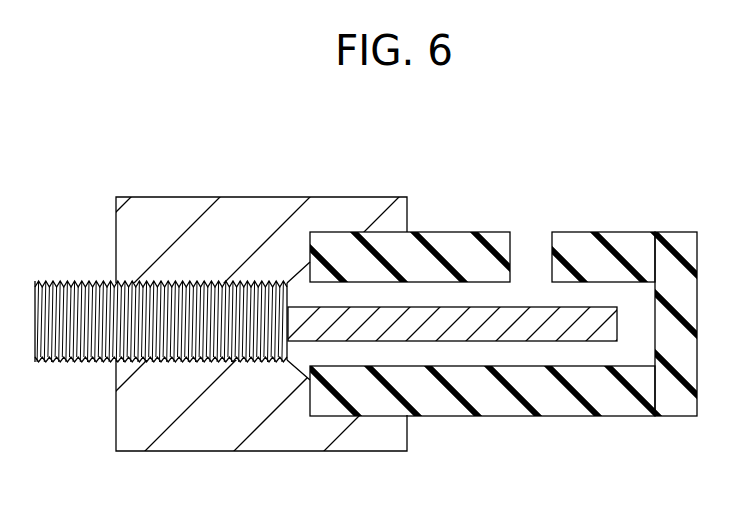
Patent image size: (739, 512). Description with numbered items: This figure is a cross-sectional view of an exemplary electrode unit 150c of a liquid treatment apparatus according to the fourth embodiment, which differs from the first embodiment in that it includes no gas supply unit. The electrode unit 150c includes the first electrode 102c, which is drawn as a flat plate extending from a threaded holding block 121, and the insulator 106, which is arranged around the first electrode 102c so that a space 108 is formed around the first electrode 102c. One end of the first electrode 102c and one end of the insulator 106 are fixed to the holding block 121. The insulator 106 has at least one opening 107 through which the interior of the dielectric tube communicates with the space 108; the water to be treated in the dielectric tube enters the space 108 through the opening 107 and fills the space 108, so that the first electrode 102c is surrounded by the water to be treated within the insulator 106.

The electrode unit 150c is at (143, 118).
The holding block 121 is at (226, 213).
The first electrode 102c is at (485, 330).
The insulator 106 is at (453, 243).
The opening 107 is at (532, 236).
The space 108 is at (628, 348).